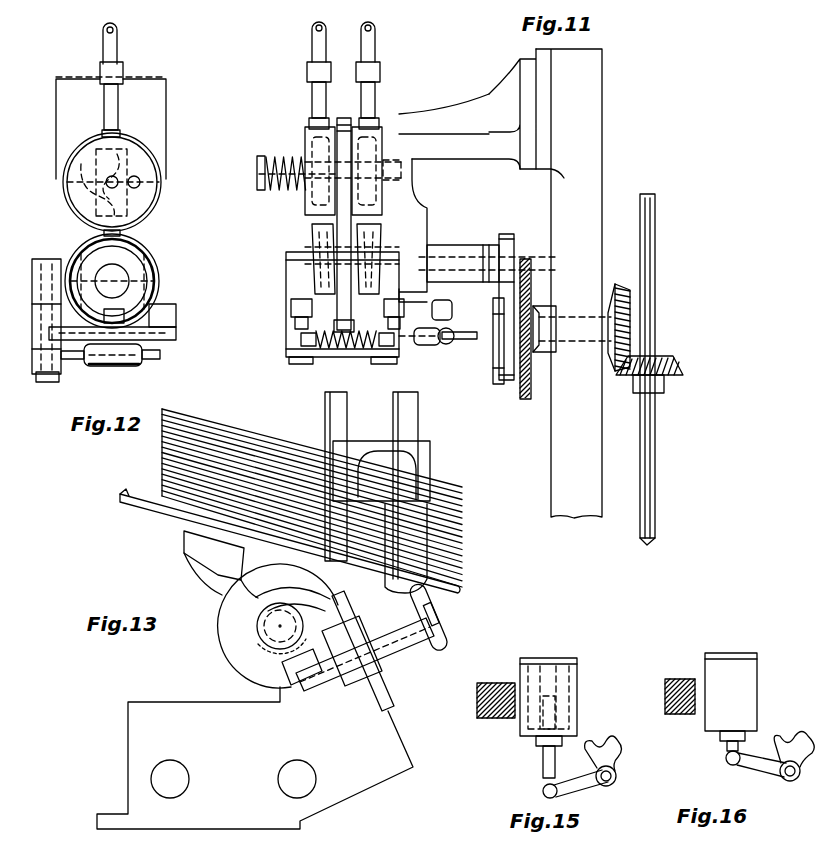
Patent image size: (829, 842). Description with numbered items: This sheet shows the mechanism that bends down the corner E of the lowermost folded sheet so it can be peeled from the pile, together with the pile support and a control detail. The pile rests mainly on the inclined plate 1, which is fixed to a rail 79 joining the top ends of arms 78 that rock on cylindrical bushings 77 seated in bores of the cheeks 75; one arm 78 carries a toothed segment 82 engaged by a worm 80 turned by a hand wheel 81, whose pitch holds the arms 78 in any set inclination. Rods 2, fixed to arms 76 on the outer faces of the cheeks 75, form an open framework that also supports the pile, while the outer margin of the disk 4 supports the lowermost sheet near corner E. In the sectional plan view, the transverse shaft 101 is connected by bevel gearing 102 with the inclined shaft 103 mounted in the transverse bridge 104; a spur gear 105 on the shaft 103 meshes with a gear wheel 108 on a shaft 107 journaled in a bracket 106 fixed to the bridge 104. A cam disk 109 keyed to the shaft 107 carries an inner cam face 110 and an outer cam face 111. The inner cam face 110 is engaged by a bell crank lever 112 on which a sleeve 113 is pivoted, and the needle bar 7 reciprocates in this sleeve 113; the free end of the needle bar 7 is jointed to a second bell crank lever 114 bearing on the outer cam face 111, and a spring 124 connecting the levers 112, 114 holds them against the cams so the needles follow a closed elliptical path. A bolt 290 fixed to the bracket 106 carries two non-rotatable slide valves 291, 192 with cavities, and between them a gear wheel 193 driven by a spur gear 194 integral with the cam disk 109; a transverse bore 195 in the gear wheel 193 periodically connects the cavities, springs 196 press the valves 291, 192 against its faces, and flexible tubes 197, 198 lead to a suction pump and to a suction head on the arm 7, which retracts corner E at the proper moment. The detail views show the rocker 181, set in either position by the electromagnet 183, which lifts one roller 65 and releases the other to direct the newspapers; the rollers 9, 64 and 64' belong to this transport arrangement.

In FIG. 13, the inclined plate 1 is at (123, 503).
In FIG. 13, the rods 2 is at (397, 398).
In FIG. 11, the disk 4 is at (527, 399).
In FIG. 12, the needle bar 7 is at (153, 356).
In FIG. 11, the needle bar 7 is at (462, 333).
In FIG. 13, the roller 9 is at (222, 645).
In FIG. 13, the wire 64 is at (344, 832).
In FIG. 13, the wire 64' is at (338, 831).
In FIG. 13, the roller 65 is at (332, 837).
In FIG. 13, the cheeks 75 is at (128, 740).
In FIG. 13, the arms 76 is at (440, 588).
In FIG. 13, the cylindrical bushings 77 is at (275, 632).
In FIG. 13, the arms 78 is at (205, 580).
In FIG. 13, the rail 79 is at (186, 536).
In FIG. 13, the worm 80 is at (316, 692).
In FIG. 13, the hand wheel 81 is at (439, 645).
In FIG. 13, the toothed segment 82 is at (278, 660).
In FIG. 13, the corner E is at (465, 562).
In FIG. 11, the transverse shaft 101 is at (648, 192).
In FIG. 11, the bevel gearing 102 is at (633, 328).
In FIG. 11, the inclined shaft 103 is at (581, 336).
In FIG. 11, the transverse bridge 104 is at (590, 104).
In FIG. 11, the spur gear 105 is at (498, 380).
In FIG. 11, the bracket 106 is at (433, 137).
In FIG. 11, the shaft 107 is at (458, 250).
In FIG. 11, the gear wheel 108 is at (507, 233).
In FIG. 11, the cam disk 109 is at (320, 239).
In FIG. 11, the inner cam face 110 is at (412, 208).
In FIG. 12, the outer cam face 111 is at (148, 282).
In FIG. 11, the outer cam face 111 is at (312, 255).
In FIG. 12, the bell crank lever 112 is at (40, 255).
In FIG. 11, the bell crank lever 112 is at (452, 318).
In FIG. 12, the sleeve 113 is at (134, 362).
In FIG. 11, the sleeve 113 is at (449, 344).
In FIG. 12, the bell crank lever 114 is at (62, 365).
In FIG. 11, the bell crank lever 114 is at (290, 350).
In FIG. 11, the spring 124 is at (346, 346).
In FIG. 15, the rocker 181 is at (616, 760).
In FIG. 16, the rocker 181 is at (793, 732).
In FIG. 15, the electromagnet 183 is at (577, 683).
In FIG. 16, the electromagnet 183 is at (731, 656).
In FIG. 12, the slide valve 192 is at (72, 190).
In FIG. 11, the slide valve 192 is at (310, 133).
In FIG. 12, the gear wheel 193 is at (150, 206).
In FIG. 11, the gear wheel 193 is at (344, 117).
In FIG. 12, the spur gear 194 is at (158, 250).
In FIG. 11, the spur gear 194 is at (346, 232).
In FIG. 11, the bore 195 is at (340, 148).
In FIG. 11, the springs 196 is at (268, 186).
In FIG. 11, the flexible tube 197 is at (374, 35).
In FIG. 12, the flexible tube 198 is at (118, 37).
In FIG. 11, the flexible tube 198 is at (313, 33).
In FIG. 11, the bolt 290 is at (390, 160).
In FIG. 11, the slide valve 291 is at (380, 133).